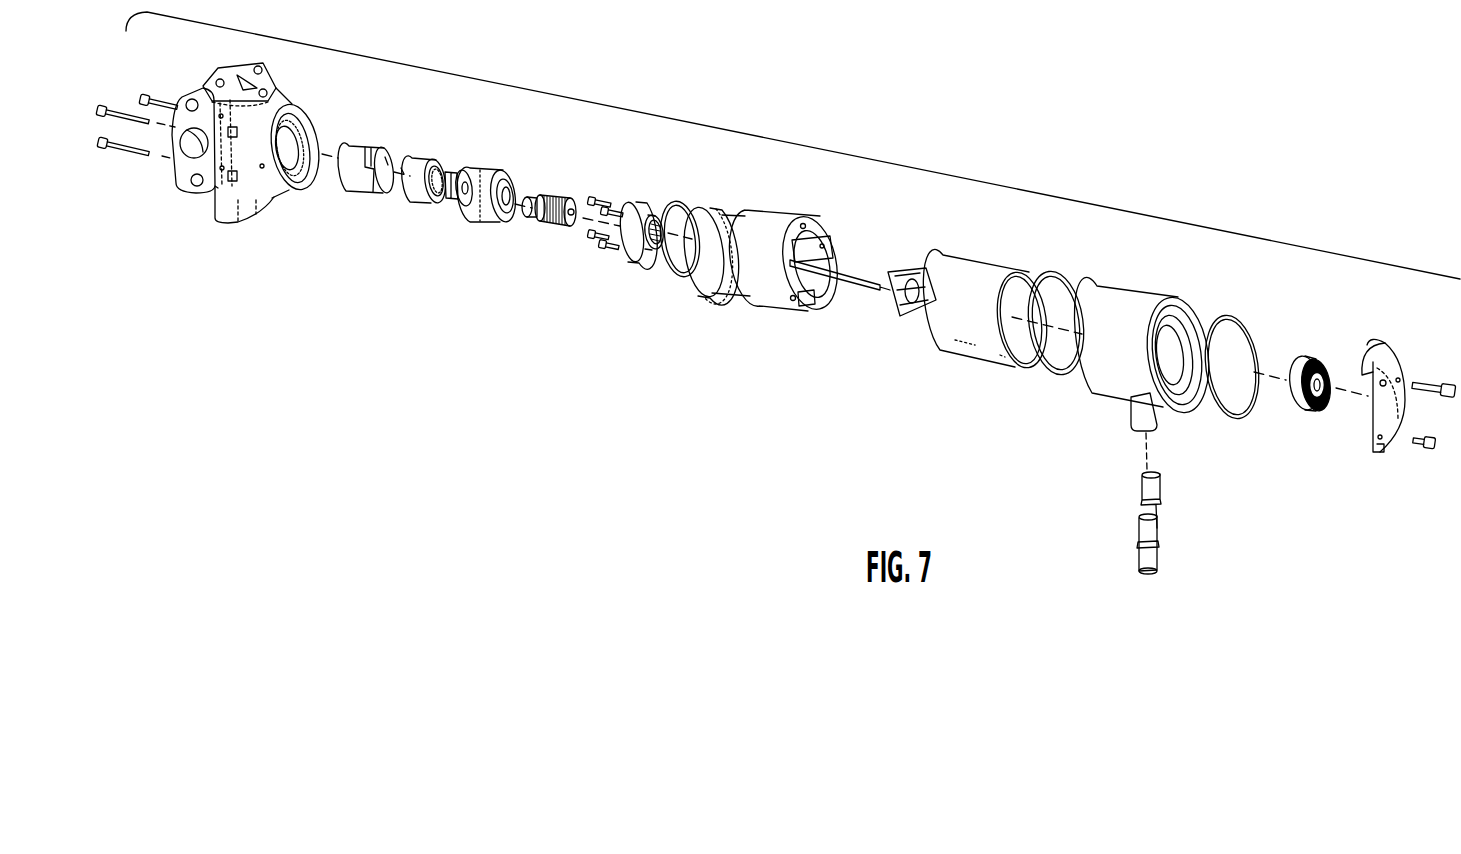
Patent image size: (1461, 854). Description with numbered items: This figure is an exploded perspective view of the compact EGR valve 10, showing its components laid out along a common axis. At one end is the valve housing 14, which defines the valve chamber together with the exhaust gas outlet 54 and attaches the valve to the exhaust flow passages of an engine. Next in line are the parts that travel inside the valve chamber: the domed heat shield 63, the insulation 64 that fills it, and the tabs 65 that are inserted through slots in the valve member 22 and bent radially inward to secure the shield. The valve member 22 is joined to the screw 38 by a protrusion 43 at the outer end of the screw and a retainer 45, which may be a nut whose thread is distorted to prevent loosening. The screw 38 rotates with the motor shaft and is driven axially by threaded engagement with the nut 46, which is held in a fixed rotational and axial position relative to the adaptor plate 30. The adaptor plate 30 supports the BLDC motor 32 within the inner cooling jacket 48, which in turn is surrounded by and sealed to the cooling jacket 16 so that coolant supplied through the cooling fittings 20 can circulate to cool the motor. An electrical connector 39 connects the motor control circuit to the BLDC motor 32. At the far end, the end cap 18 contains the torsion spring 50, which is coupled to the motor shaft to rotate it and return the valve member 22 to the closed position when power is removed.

The compact EGR valve 10 is at (858, 157).
The valve housing 14 is at (234, 141).
The cooling jacket 16 is at (1150, 300).
The end cap 18 is at (1392, 370).
The cooling fittings 20 is at (1157, 538).
The valve member 22 is at (480, 217).
The adaptor plate 30 is at (762, 229).
The BLDC motor 32 is at (774, 205).
The screw 38 is at (556, 193).
The electrical connector 39 is at (907, 268).
The protrusion 43 is at (524, 218).
The retainer 45 is at (458, 172).
The nut 46 is at (655, 202).
The inner cooling jacket 48 is at (993, 278).
The torsion spring 50 is at (1297, 395).
The exhaust gas outlet 54 is at (183, 143).
The heat shield 63 is at (357, 150).
The insulation 64 is at (426, 160).
The tabs 65 is at (401, 168).